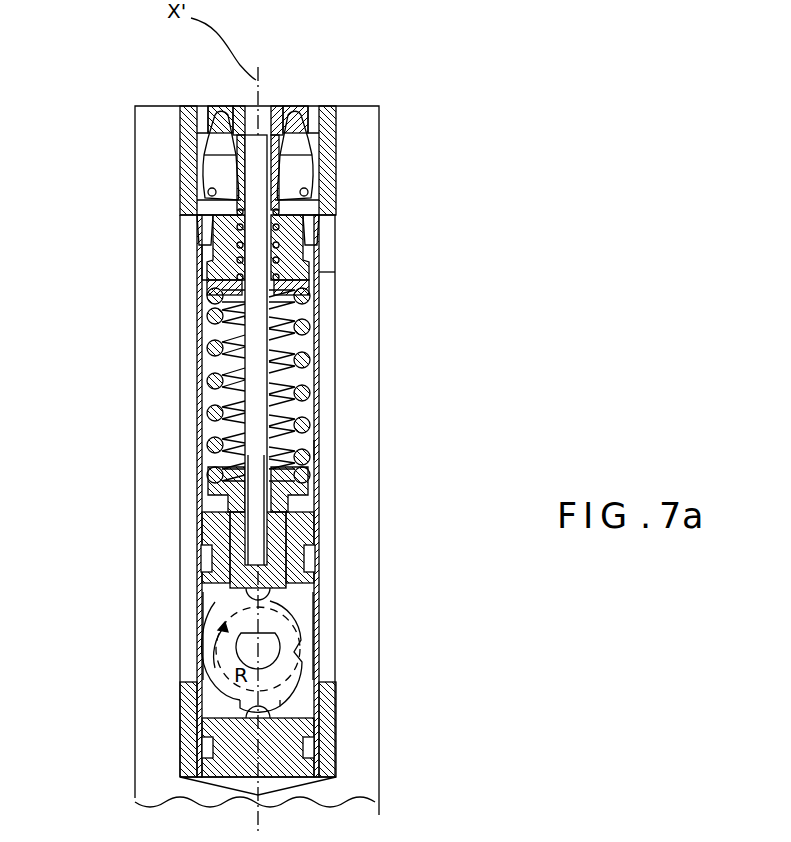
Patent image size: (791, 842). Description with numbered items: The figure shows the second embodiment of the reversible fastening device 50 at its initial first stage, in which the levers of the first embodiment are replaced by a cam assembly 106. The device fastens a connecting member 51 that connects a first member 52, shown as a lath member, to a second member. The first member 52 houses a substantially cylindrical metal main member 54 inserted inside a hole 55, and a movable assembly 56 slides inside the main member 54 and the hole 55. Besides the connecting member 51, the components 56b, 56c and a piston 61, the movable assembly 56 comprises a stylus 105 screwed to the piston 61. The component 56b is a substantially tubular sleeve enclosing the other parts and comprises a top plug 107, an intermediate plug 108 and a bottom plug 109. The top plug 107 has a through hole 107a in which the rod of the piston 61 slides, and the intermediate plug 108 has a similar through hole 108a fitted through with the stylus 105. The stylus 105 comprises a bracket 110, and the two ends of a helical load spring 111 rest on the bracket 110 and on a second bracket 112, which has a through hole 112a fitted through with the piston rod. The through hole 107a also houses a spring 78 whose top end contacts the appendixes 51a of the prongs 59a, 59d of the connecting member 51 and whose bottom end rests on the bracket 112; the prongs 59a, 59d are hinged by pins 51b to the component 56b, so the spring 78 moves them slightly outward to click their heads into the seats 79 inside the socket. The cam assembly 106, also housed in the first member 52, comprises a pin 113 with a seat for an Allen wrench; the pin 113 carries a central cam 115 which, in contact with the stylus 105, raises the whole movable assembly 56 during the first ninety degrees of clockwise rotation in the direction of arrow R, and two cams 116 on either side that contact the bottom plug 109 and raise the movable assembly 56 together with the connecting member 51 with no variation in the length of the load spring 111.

The reversible fastening device 50 is at (410, 590).
The connecting member 51 is at (298, 181).
The appendixes 51a is at (200, 214).
The pins 51b is at (233, 198).
The first member 52 is at (358, 795).
The main member 54 is at (180, 147).
The hole 55 is at (182, 362).
The movable assembly 56 is at (175, 435).
The component 56b is at (320, 452).
The component 56c is at (229, 151).
The prong 59a is at (304, 141).
The prong 59d is at (208, 190).
The piston 61 is at (266, 438).
The spring 78 is at (300, 266).
The seats 79 is at (178, 107).
The stylus 105 is at (240, 547).
The cam assembly 106 is at (183, 645).
The top plug 107 is at (213, 257).
The through hole 107a is at (207, 279).
The intermediate plug 108 is at (213, 532).
The through hole 108a is at (286, 530).
The bottom plug 109 is at (237, 740).
The bracket 110 is at (300, 487).
The helical load spring 111 is at (315, 368).
The bracket 112 is at (300, 308).
The through hole 112a is at (244, 318).
The pin 113 is at (273, 642).
The central cam 115 is at (298, 662).
The cams 116 is at (318, 713).